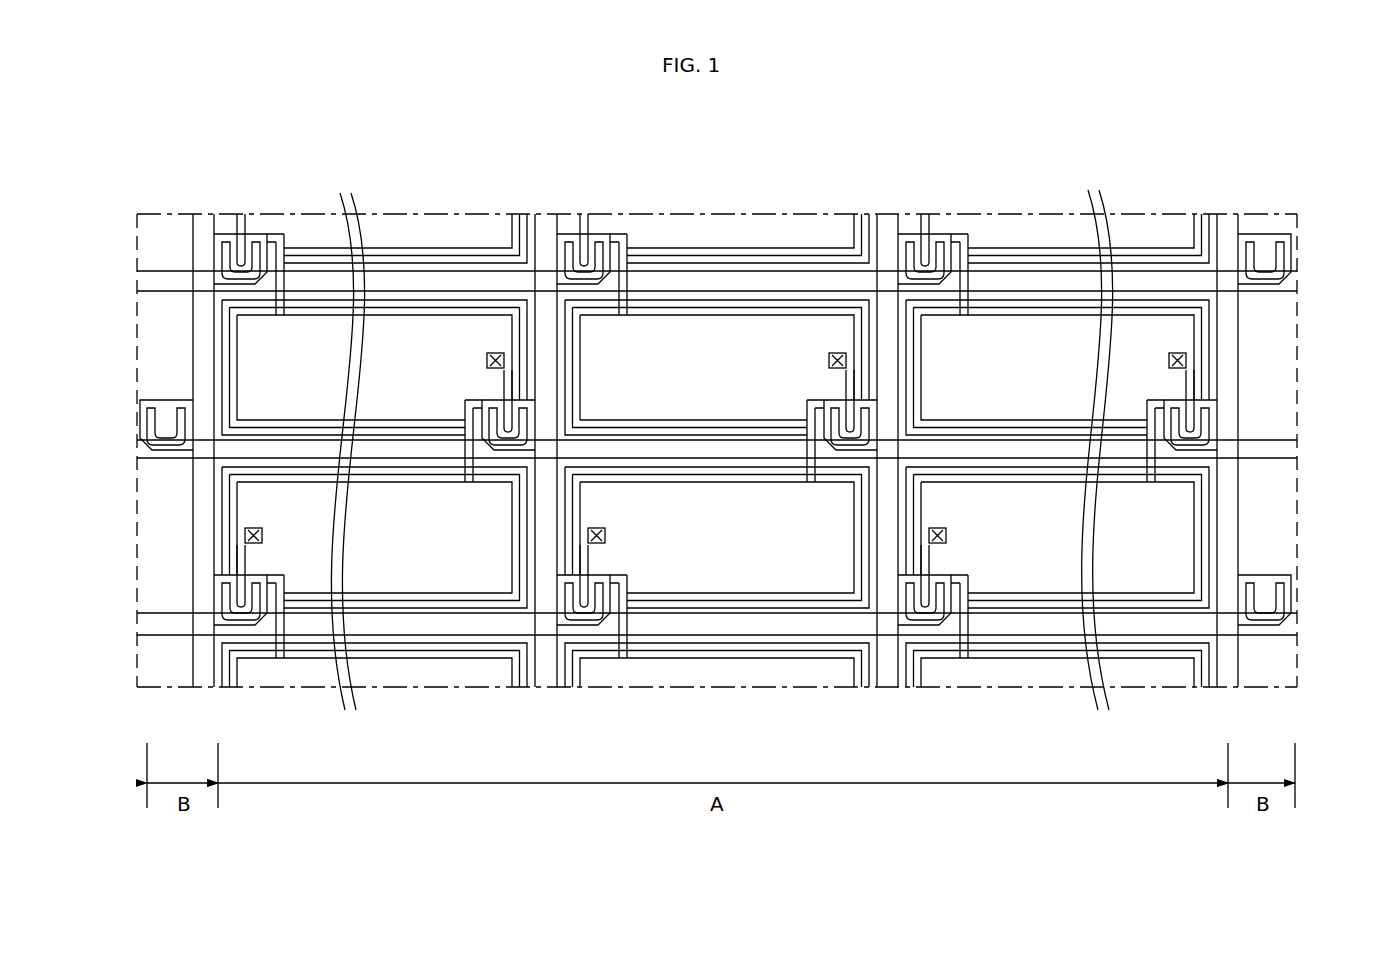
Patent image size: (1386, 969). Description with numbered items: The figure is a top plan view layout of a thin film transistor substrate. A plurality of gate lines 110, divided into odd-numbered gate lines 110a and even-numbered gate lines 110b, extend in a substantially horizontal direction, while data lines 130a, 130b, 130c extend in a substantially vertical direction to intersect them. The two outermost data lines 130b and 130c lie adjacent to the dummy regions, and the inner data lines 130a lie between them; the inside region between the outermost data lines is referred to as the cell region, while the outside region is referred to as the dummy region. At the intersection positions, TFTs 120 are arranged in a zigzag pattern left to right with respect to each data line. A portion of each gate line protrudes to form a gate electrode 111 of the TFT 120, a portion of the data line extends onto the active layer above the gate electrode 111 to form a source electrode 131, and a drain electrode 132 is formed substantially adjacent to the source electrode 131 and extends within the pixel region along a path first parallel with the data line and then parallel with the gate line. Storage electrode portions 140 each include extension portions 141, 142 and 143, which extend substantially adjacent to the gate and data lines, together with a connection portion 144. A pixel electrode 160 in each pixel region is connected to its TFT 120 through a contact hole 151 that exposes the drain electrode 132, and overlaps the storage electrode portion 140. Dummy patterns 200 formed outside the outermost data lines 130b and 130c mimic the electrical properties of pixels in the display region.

The gate line 110 is at (470, 628).
The odd-numbered gate line 110a is at (1285, 446).
The even-numbered gate line 110b is at (1300, 622).
The gate electrode 111 is at (870, 428).
The TFT 120 is at (929, 398).
The data line 130a is at (888, 218).
The outermost data line 130b is at (201, 218).
The outermost data line 130c is at (1228, 215).
The source electrode 131 is at (865, 418).
The drain electrode 132 is at (852, 383).
The storage electrode portion 140 is at (717, 334).
The extension portion 141 is at (582, 380).
The extension portion 142 is at (627, 418).
The extension portion 143 is at (593, 312).
The connection portion 144 is at (618, 280).
The contact hole 151 is at (832, 356).
The pixel electrode 160 is at (870, 330).
The dummy pattern 200 is at (1292, 247).